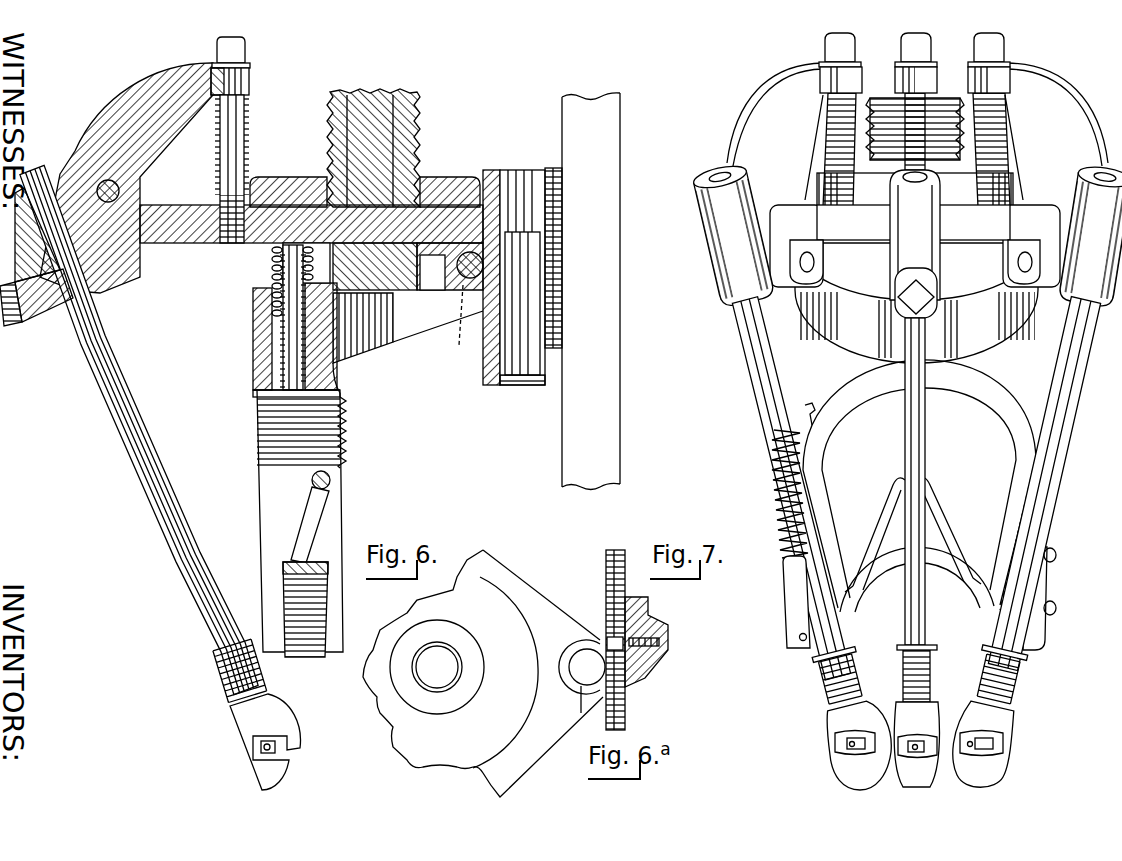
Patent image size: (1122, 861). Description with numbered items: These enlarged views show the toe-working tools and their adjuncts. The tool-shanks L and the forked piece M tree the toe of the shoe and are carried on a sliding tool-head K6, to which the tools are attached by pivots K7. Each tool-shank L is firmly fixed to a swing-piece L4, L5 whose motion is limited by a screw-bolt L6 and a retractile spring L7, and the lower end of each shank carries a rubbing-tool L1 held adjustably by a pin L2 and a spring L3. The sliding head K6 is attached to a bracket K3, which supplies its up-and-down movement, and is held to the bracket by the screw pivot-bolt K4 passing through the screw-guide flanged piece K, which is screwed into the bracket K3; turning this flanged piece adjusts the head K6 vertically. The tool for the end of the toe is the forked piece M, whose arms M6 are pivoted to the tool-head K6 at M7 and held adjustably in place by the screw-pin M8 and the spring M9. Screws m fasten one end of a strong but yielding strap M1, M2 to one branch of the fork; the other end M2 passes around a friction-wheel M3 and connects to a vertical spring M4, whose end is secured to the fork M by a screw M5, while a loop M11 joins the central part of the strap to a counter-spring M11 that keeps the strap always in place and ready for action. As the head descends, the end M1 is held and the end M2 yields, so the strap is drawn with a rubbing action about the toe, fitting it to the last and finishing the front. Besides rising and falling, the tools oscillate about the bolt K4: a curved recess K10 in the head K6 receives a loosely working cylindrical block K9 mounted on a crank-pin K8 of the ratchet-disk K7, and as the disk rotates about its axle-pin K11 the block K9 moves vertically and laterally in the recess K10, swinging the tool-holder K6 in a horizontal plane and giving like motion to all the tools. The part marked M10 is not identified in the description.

In FIG. 6, the screw-guide flanged piece K is at (366, 222).
In FIG. 6A, the screw-guide flanged piece K is at (483, 673).
In FIG. 6, the bracket K3 is at (620, 141).
In FIG. 6A, the bracket K3 is at (644, 642).
In FIG. 6, the screw pivot-bolt K4 is at (374, 138).
In FIG. 6A, the screw pivot-bolt K4 is at (437, 667).
In FIG. 7, the screw pivot-bolt K4 is at (915, 129).
In FIG. 6, the sliding head K6 is at (213, 244).
In FIG. 6A, the sliding head K6 is at (560, 628).
In FIG. 7, the sliding head K6 is at (915, 246).
In FIG. 6, the pivots K7 is at (140, 182).
In FIG. 7, the pivots K7 is at (915, 252).
In FIG. 6, the crank-pin K8 is at (553, 308).
In FIG. 6A, the crank-pin K8 is at (625, 688).
In FIG. 6, the cylindrical block K9 is at (518, 378).
In FIG. 6A, the cylindrical block K9 is at (582, 667).
In FIG. 6, the curved recess K10 is at (501, 261).
In FIG. 6A, the curved recess K10 is at (581, 713).
In FIG. 6, the axle-pin K11 is at (634, 236).
In FIG. 6A, the axle-pin K11 is at (605, 570).
In FIG. 6, the tool-shanks L is at (139, 429).
In FIG. 7, the tool-shanks L is at (803, 486).
In FIG. 6, the rubbing-tool L1 is at (265, 736).
In FIG. 7, the rubbing-tool L1 is at (1027, 720).
In FIG. 6, the pin L2 is at (261, 748).
In FIG. 7, the pin L2 is at (840, 746).
In FIG. 6, the spring L3 is at (230, 673).
In FIG. 7, the spring L3 is at (1031, 686).
In FIG. 6, the swing-piece L4 is at (58, 168).
In FIG. 7, the swing-piece L4 is at (902, 240).
In FIG. 6, the swing-piece L5 is at (126, 178).
In FIG. 7, the swing-piece L5 is at (917, 114).
In FIG. 6, the screw-bolt L6 is at (233, 96).
In FIG. 7, the screw-bolt L6 is at (852, 50).
In FIG. 6, the retractile spring L7 is at (247, 116).
In FIG. 7, the retractile spring L7 is at (833, 112).
In FIG. 6, the forked piece M is at (338, 476).
In FIG. 6, the strap M1 is at (322, 626).
In FIG. 7, the strap M1 is at (992, 398).
In FIG. 7, the strap end M2 is at (783, 600).
In FIG. 7, the friction-wheel M3 is at (798, 650).
In FIG. 7, the vertical spring M4 is at (772, 510).
In FIG. 7, the screw M5 is at (814, 395).
In FIG. 6, the arms M6 is at (403, 340).
In FIG. 7, the arms M6 is at (1005, 352).
In FIG. 6, the pivot M7 is at (450, 333).
In FIG. 6, the screw-pin M8 is at (272, 262).
In FIG. 6, the spring M9 is at (253, 292).
In FIG. 6, the link M10 is at (317, 527).
In FIG. 7, the link M10 is at (949, 540).
In FIG. 6, the loop and counter-spring M11 is at (348, 438).
In FIG. 7, the screws m is at (1056, 555).